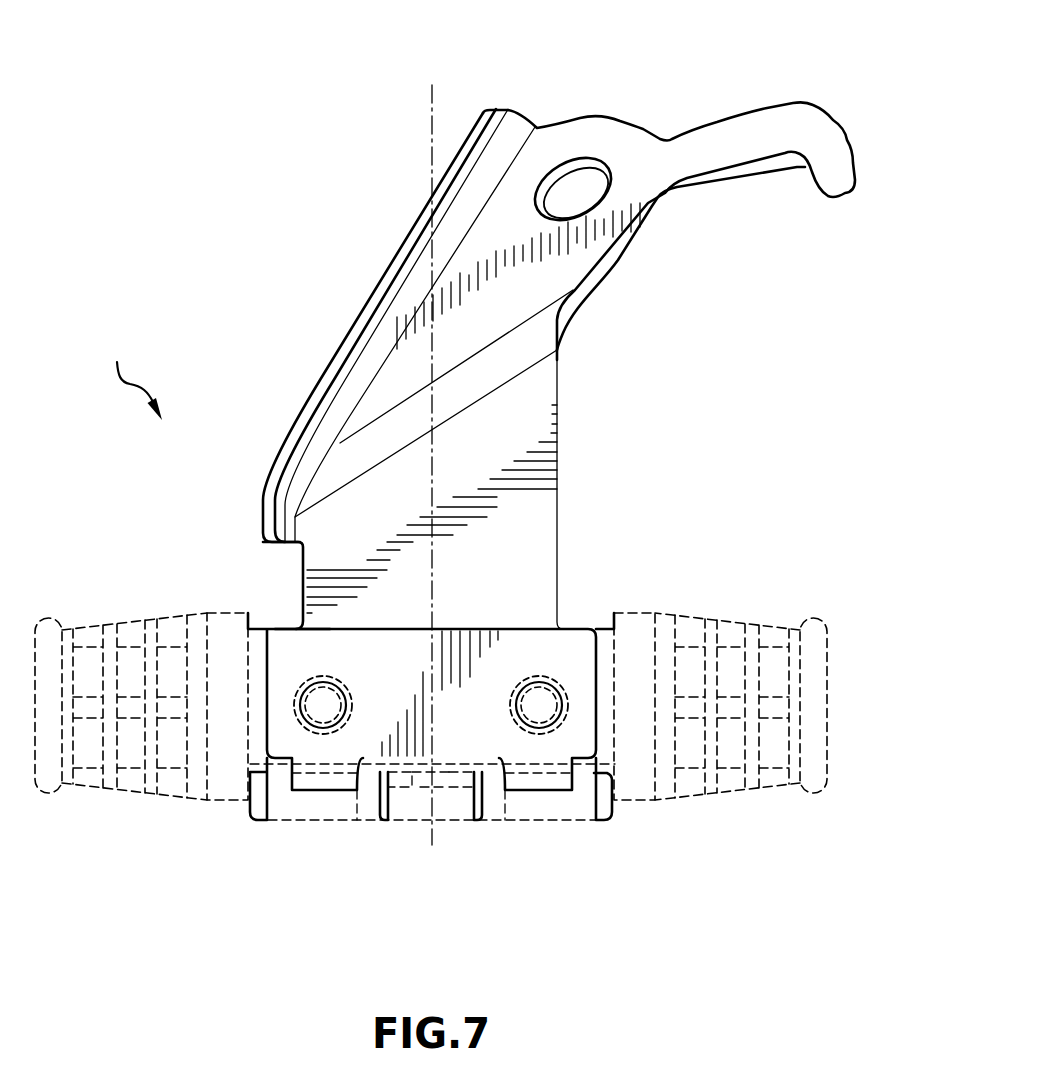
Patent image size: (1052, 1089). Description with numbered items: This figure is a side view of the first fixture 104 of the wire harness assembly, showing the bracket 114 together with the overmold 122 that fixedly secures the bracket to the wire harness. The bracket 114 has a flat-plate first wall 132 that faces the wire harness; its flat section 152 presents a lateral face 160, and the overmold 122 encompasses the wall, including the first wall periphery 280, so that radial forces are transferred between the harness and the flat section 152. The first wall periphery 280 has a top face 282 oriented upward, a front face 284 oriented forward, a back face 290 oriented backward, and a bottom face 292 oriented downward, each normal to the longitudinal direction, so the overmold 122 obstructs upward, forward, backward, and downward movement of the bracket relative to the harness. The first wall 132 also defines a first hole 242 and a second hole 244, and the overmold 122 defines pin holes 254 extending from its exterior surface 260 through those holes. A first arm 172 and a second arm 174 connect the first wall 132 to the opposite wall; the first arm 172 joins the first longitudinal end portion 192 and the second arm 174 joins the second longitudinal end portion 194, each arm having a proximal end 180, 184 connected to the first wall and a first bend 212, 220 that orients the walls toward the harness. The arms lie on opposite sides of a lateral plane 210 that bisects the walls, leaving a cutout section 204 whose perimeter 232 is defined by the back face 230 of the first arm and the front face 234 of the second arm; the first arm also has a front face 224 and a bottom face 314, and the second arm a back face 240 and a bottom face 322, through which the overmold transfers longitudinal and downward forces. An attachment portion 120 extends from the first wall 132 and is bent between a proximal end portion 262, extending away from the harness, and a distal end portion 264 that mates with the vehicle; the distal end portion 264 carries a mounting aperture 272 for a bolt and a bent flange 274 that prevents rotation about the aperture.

The first fixture 104 is at (128, 372).
The bracket 114 is at (357, 450).
The attachment portion 120 is at (355, 493).
The overmold 122 is at (817, 652).
The first wall 132 is at (403, 720).
The flat section 152 is at (445, 670).
The lateral face 160 is at (463, 668).
The first arm 172 is at (546, 773).
The second arm 174 is at (325, 775).
The proximal end 180 is at (537, 775).
The proximal end 184 is at (341, 775).
The first longitudinal end portion 192 is at (530, 677).
The second longitudinal end portion 194 is at (300, 672).
The cutout section 204 is at (443, 757).
The lateral plane 210 is at (432, 168).
The first bend 212 is at (292, 773).
The first bend 220 is at (572, 773).
The front face 224 is at (597, 773).
The back face 230 is at (500, 773).
The perimeter 232 is at (462, 758).
The front face 234 is at (365, 775).
The back face 240 is at (268, 792).
The first hole 242 is at (268, 795).
The second hole 244 is at (560, 667).
The pin holes 254 is at (310, 710).
The exterior surface 260 is at (226, 612).
The proximal end portion 262 is at (495, 537).
The distal end portion 264 is at (481, 300).
The mounting aperture 272 is at (560, 170).
The flange 274 is at (833, 143).
The first wall periphery 280 is at (263, 667).
The top face 282 is at (287, 627).
The front face 284 is at (293, 698).
The back face 290 is at (600, 695).
The bottom face 292 is at (420, 757).
The bottom face 314 is at (585, 774).
The bottom face 322 is at (350, 776).